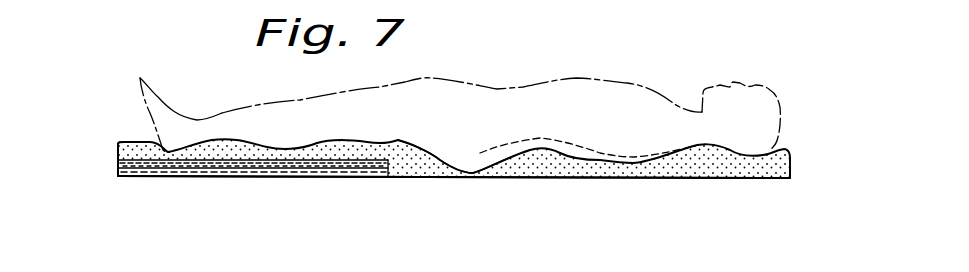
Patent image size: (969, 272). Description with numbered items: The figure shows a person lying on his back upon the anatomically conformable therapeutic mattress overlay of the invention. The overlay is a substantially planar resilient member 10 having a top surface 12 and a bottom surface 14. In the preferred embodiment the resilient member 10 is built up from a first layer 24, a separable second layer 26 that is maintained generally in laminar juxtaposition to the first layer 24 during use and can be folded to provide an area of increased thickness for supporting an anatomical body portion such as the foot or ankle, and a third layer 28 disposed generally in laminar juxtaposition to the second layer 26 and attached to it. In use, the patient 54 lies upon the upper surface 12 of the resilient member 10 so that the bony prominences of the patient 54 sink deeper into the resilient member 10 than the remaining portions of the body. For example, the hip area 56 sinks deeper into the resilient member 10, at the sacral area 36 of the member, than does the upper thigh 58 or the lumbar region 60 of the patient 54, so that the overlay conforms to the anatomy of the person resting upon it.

The resilient member 10 is at (798, 163).
The top surface 12 is at (132, 140).
The bottom surface 14 is at (667, 182).
The first layer 24 is at (115, 150).
The second layer 26 is at (230, 173).
The third layer 28 is at (292, 177).
The sacral area 36 is at (530, 182).
The patient 54 is at (547, 80).
The hip area 56 is at (485, 152).
The upper thigh 58 is at (398, 138).
The lumbar region 60 is at (558, 154).